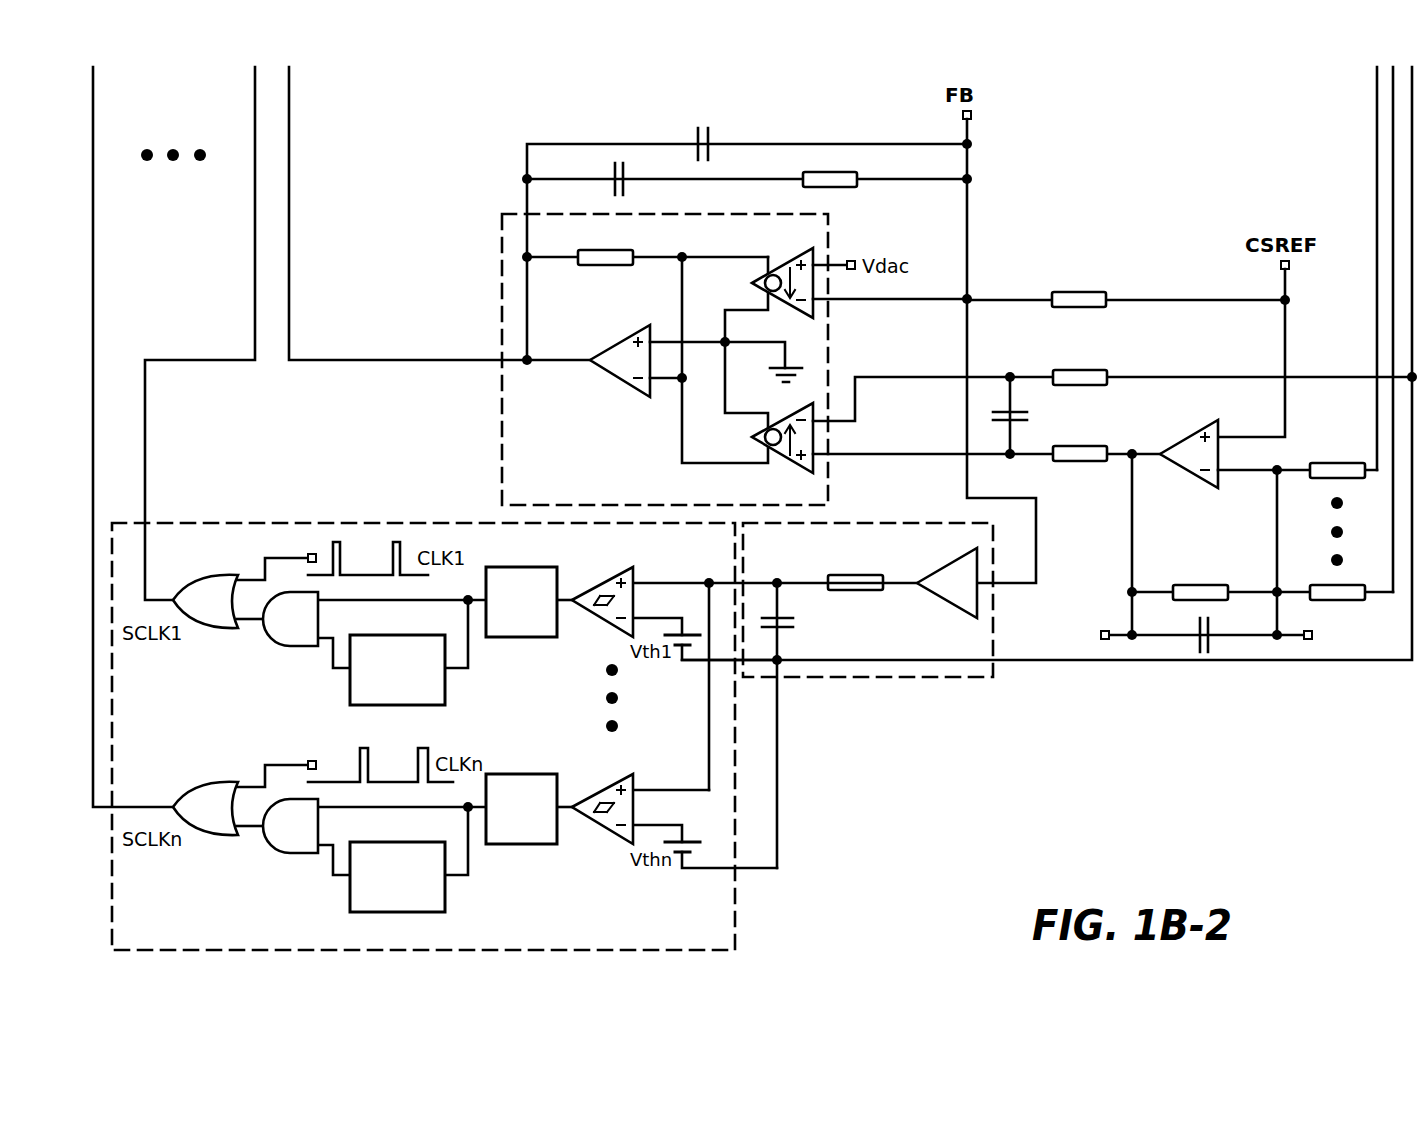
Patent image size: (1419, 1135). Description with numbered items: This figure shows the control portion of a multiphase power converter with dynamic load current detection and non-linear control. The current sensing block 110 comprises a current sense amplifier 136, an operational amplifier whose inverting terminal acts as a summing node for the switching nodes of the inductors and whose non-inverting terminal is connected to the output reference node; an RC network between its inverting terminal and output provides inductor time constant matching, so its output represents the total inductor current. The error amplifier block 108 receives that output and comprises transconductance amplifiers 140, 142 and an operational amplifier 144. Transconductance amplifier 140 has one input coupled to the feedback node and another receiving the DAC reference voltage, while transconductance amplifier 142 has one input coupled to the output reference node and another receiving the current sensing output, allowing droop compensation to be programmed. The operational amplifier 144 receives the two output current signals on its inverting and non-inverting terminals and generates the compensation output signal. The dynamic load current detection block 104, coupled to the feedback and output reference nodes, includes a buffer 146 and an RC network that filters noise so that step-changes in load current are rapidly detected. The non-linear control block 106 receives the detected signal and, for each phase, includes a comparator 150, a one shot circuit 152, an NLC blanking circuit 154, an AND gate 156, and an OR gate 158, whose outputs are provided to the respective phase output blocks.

The dynamic load current detection block 104 is at (932, 677).
The non-linear control block 106 is at (736, 912).
The error amplifier block 108 is at (502, 460).
The current sensing block 110 is at (1198, 525).
The current sense amplifier 136 is at (1192, 425).
The transconductance amplifier 140 is at (786, 258).
The transconductance amplifier 142 is at (796, 476).
The operational amplifier 144 is at (628, 330).
The buffer 146 is at (944, 568).
The comparator 150 is at (620, 567).
The one shot circuit 152 is at (548, 567).
The non-linear control (NLC) blanking circuit 154 is at (445, 685).
The AND gate 156 is at (300, 650).
The OR gate 158 is at (232, 575).